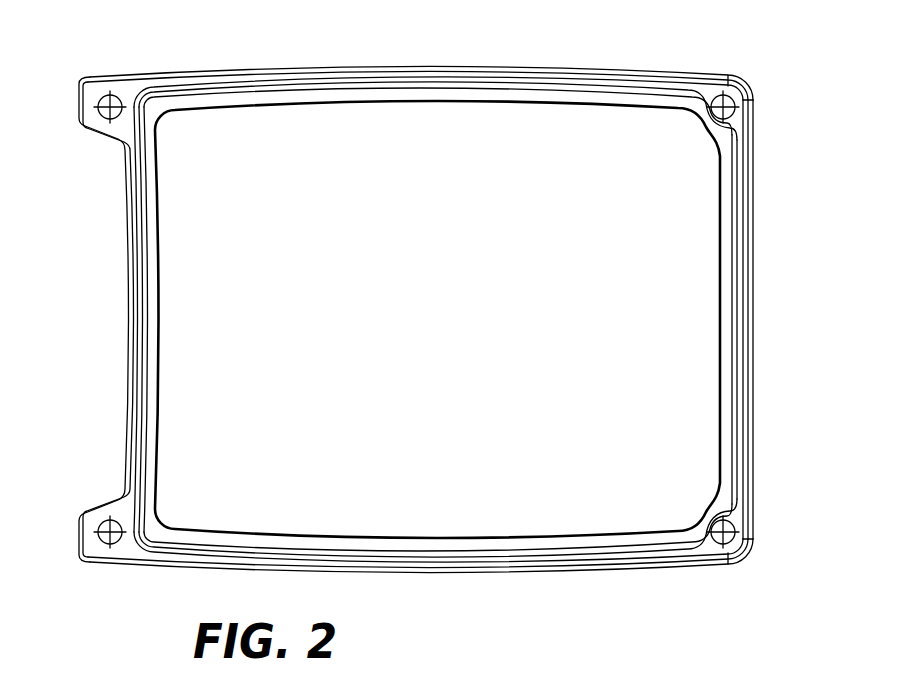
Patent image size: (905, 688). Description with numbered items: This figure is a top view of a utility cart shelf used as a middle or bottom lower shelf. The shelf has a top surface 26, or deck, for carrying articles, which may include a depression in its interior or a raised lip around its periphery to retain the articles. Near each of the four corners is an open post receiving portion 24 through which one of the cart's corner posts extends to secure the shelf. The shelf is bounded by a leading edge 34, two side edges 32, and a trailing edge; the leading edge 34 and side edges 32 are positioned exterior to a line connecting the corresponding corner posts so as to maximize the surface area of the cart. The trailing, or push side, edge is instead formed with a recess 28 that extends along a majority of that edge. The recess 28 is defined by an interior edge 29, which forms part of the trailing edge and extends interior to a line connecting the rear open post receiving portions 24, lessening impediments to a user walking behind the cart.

The open post receiving portion 24 is at (112, 107).
The top surface 26 is at (692, 395).
The recess 28 is at (97, 380).
The interior edge 29 is at (133, 328).
The side edges 32 is at (415, 67).
The leading edge 34 is at (756, 285).